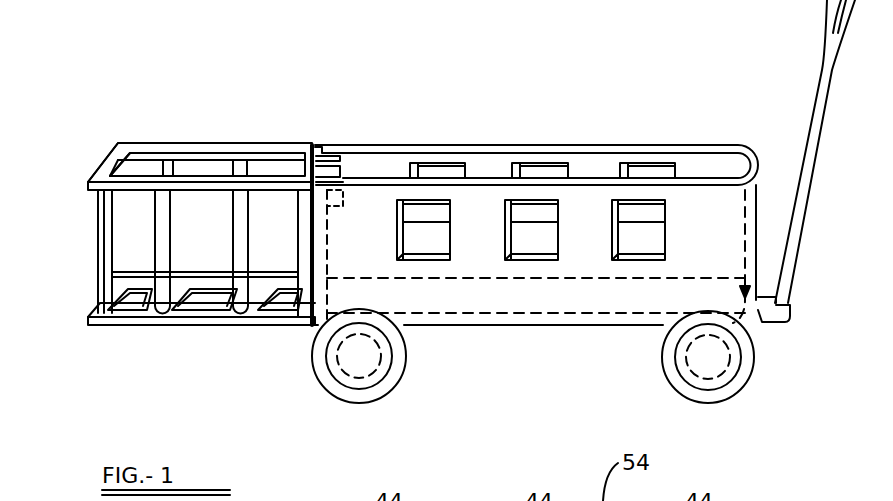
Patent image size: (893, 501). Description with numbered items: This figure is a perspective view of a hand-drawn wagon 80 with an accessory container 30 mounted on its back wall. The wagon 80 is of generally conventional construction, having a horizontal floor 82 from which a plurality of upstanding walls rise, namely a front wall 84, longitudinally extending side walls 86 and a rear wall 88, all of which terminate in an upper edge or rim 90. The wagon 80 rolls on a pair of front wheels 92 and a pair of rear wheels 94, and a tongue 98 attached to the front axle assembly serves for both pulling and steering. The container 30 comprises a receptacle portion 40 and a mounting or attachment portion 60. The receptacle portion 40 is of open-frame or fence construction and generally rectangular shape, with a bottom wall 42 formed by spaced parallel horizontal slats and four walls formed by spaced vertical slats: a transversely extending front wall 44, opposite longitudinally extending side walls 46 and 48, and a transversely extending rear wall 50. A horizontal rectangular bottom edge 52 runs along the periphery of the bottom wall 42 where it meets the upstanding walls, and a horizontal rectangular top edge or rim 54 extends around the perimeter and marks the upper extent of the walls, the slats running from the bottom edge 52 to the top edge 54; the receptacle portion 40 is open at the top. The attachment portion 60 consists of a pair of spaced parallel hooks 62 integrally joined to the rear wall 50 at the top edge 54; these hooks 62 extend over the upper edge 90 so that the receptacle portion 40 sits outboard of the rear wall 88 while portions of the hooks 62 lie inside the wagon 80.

The container 30 is at (155, 327).
The receptacle portion 40 is at (207, 145).
The bottom wall 42 is at (203, 285).
The front wall 44 is at (98, 243).
The side wall 46 is at (238, 292).
The side wall 48 is at (167, 168).
The rear wall 50 is at (310, 305).
The bottom edge 52 is at (132, 318).
The top edge 54 is at (115, 156).
The attachment portion 60 is at (365, 129).
The hook 62 is at (327, 145).
The wagon 80 is at (584, 221).
The floor 82 is at (604, 328).
The front wall 84 is at (757, 219).
The side wall 86 is at (528, 145).
The rear wall 88 is at (330, 241).
The upper edge 90 is at (604, 145).
The front wheel 92 is at (750, 358).
The rear wheel 94 is at (399, 373).
The tongue 98 is at (790, 310).